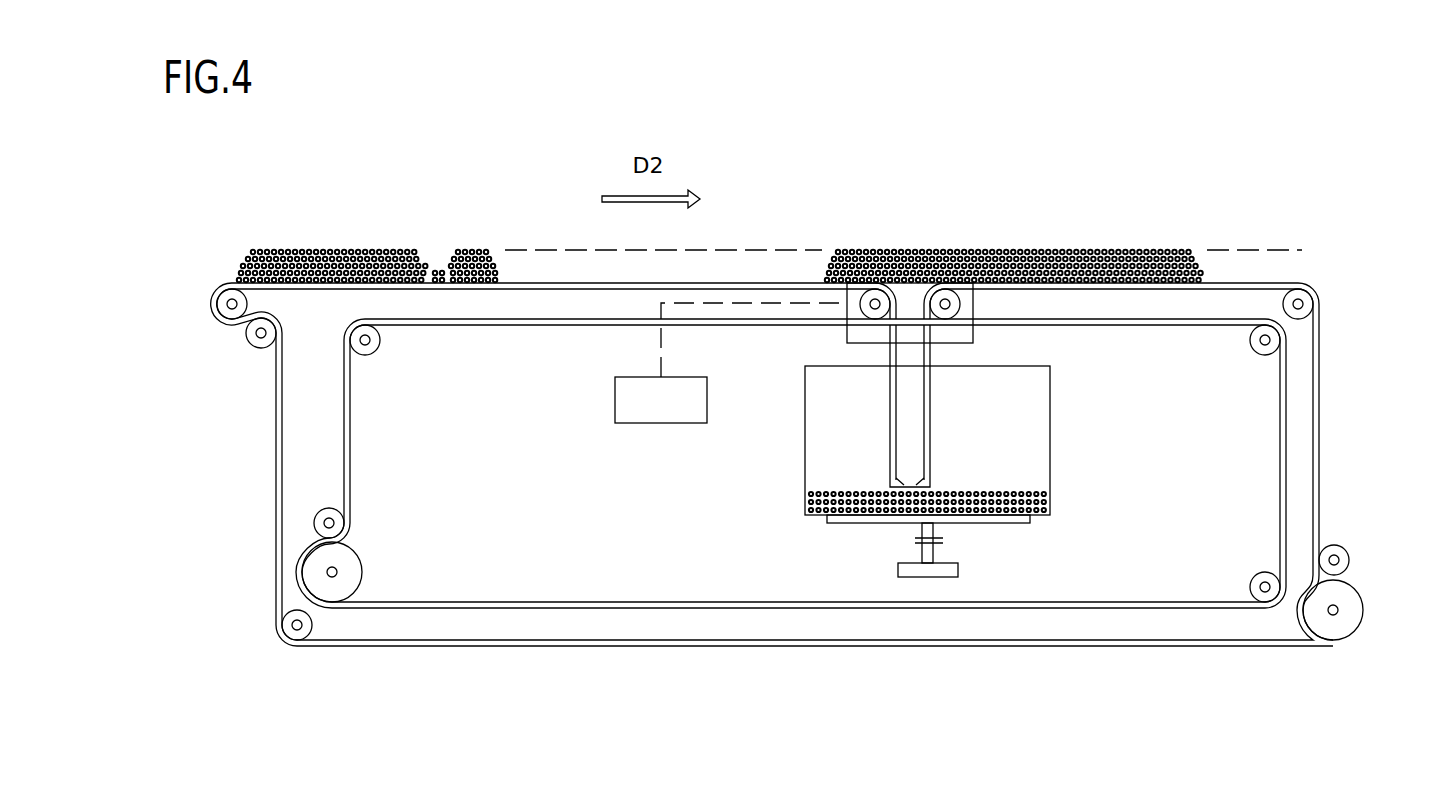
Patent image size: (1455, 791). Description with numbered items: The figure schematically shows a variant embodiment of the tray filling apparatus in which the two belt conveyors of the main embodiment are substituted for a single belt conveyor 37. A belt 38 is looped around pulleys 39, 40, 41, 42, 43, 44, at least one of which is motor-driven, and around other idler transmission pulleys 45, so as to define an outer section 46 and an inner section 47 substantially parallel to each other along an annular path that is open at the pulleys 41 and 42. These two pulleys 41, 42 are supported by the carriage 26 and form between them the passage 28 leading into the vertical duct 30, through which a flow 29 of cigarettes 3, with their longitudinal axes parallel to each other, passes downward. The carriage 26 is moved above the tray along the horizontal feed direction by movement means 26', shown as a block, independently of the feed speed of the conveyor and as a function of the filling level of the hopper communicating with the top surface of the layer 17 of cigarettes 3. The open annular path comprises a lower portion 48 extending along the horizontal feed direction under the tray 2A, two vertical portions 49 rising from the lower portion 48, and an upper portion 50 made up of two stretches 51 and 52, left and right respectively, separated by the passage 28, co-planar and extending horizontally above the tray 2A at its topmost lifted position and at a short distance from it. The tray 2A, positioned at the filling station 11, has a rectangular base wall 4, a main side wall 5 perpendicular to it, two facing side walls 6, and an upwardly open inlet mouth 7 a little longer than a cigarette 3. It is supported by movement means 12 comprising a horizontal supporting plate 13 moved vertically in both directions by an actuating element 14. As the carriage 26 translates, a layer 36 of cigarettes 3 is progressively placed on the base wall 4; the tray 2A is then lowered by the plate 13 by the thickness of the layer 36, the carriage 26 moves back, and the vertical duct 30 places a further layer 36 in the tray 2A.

The tray 2A is at (1055, 505).
The cigarette 3 is at (1052, 250).
The base wall 4 is at (1030, 524).
The main side wall 5 is at (965, 433).
The side wall 6 is at (1050, 411).
The inlet mouth 7 is at (1042, 358).
The filling station 11 is at (790, 366).
The movement means 12 is at (858, 540).
The supporting plate 13 is at (828, 521).
The actuating element 14 is at (926, 570).
The layer 17 is at (290, 248).
The carriage 26 is at (889, 235).
The movement means 26' is at (731, 363).
The passage 28 is at (913, 305).
The flow 29 is at (930, 482).
The vertical duct 30 is at (887, 455).
The layer 36 is at (1042, 490).
The belt conveyor 37 is at (271, 510).
The belt 38 is at (276, 427).
The pulley 39 is at (222, 292).
The pulley 40 is at (1304, 312).
The pulley 41 is at (876, 297).
The pulley 42 is at (950, 297).
The pulley 43 is at (357, 572).
The pulley 44 is at (1342, 628).
The idler transmission pulley 45 is at (247, 335).
The outer section 46 is at (1107, 649).
The inner section 47 is at (756, 610).
The lower portion 48 is at (446, 648).
The vertical portion 49 is at (273, 467).
The upper portion 50 is at (495, 248).
The stretch 51 is at (443, 250).
The stretch 52 is at (1300, 284).